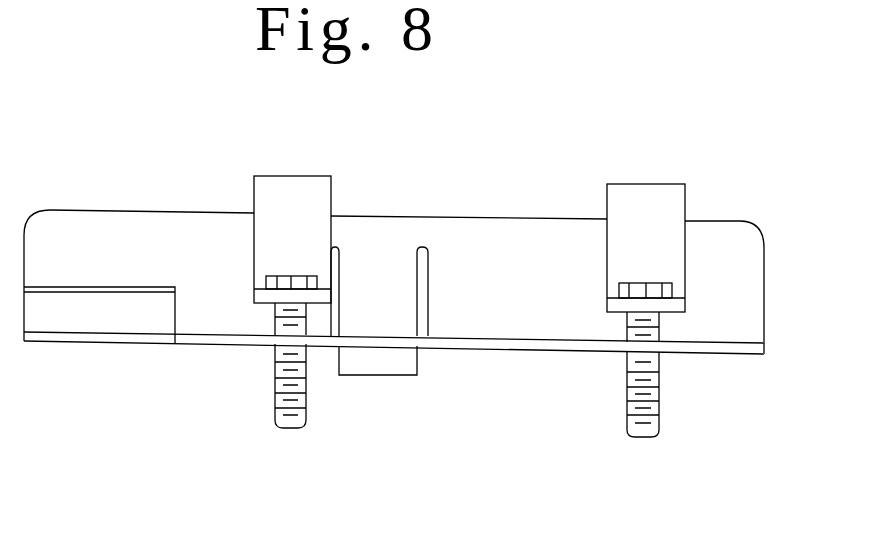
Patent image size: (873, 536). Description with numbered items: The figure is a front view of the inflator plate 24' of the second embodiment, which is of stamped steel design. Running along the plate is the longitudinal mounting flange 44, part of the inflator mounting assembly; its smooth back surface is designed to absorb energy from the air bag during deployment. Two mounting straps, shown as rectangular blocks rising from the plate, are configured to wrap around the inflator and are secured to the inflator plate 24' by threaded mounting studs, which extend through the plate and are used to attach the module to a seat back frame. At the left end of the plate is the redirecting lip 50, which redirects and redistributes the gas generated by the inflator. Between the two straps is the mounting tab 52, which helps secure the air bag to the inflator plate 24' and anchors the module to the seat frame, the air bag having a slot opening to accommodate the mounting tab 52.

The inflator plate 24' is at (429, 373).
The mounting flange 44 is at (80, 233).
The redirecting lip 50 is at (115, 322).
The mounting tab 52 is at (382, 375).